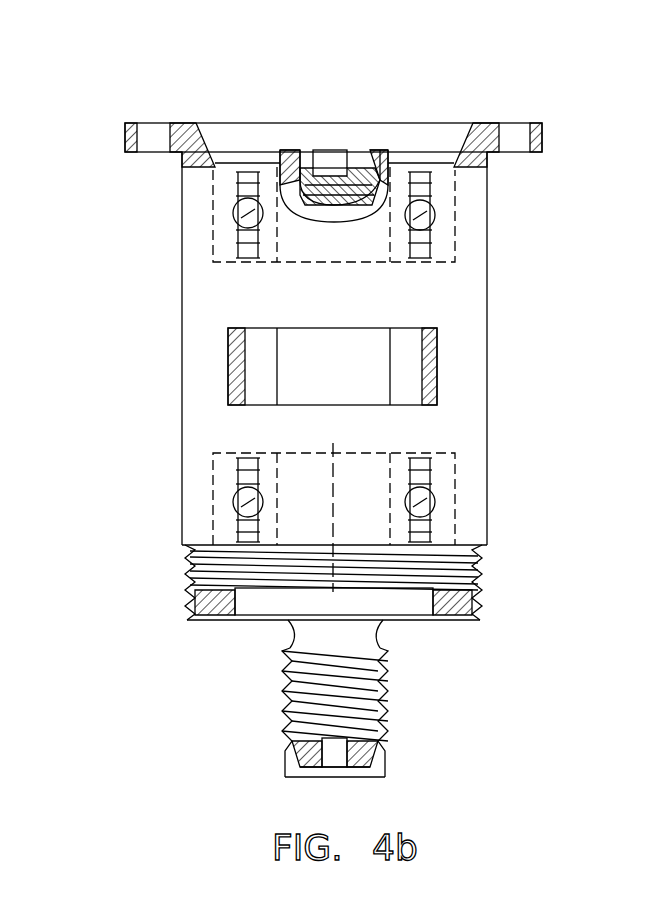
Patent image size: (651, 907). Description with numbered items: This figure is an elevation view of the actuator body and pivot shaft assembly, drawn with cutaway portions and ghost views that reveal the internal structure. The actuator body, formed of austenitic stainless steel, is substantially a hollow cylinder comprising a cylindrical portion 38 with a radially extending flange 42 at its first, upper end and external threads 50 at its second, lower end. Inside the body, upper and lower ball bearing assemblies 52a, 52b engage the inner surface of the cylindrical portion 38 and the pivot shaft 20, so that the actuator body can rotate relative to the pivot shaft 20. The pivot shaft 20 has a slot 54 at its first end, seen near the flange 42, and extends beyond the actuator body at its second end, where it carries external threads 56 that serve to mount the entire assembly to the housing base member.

The cylindrical portion 38 is at (182, 434).
The radially extending flange 42 is at (125, 132).
The slot 54 is at (333, 158).
The pivot shaft 20 is at (378, 200).
The upper ball bearing assembly 52a is at (445, 212).
The lower ball bearing assembly 52b is at (445, 513).
The external threads 50 is at (163, 542).
The external threads 56 is at (262, 647).